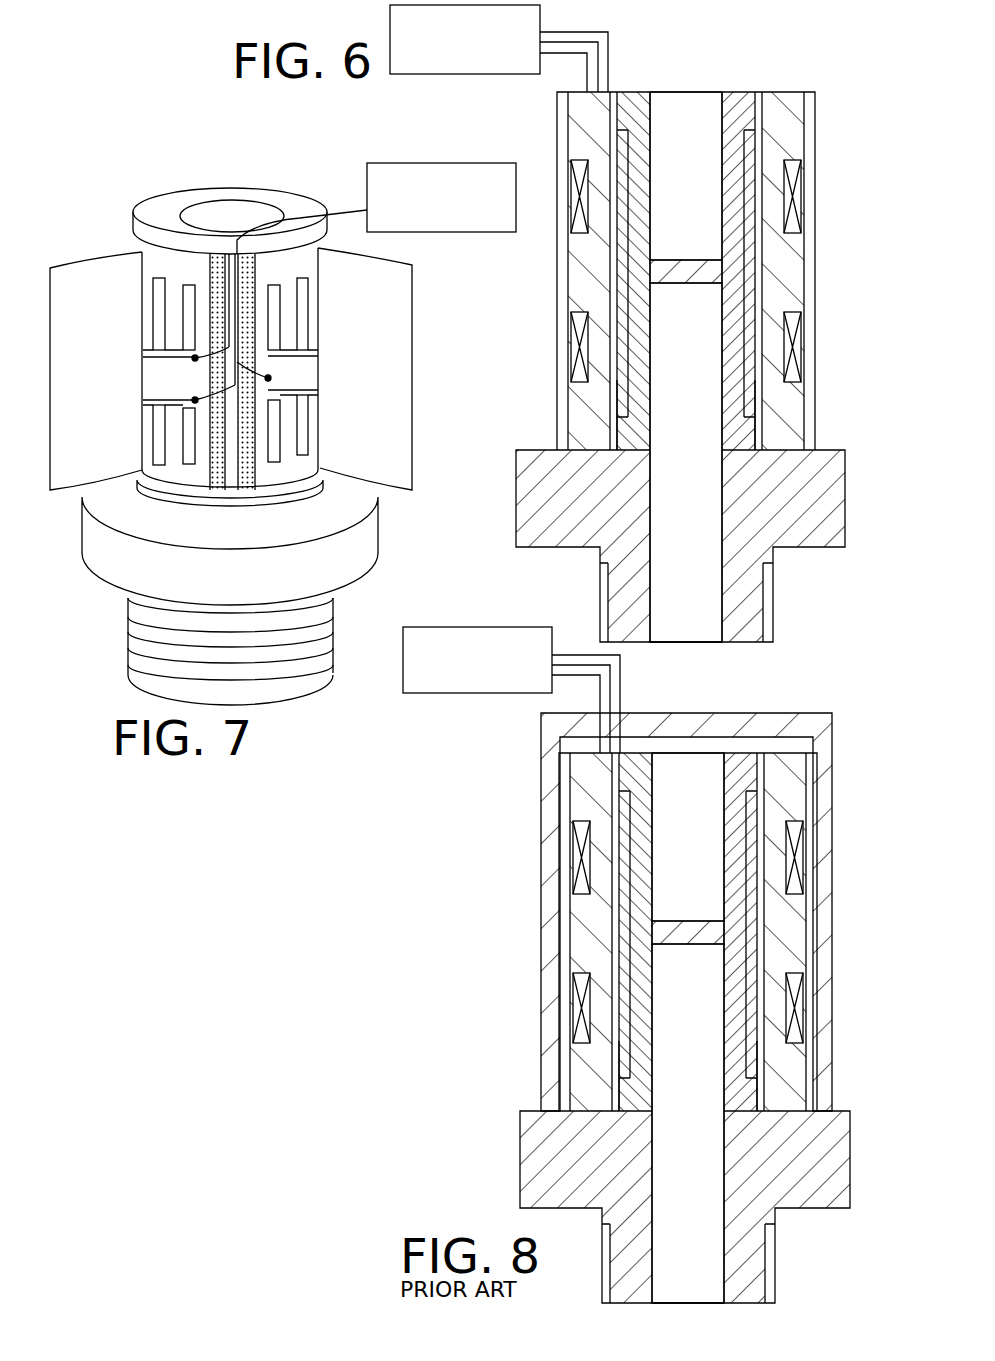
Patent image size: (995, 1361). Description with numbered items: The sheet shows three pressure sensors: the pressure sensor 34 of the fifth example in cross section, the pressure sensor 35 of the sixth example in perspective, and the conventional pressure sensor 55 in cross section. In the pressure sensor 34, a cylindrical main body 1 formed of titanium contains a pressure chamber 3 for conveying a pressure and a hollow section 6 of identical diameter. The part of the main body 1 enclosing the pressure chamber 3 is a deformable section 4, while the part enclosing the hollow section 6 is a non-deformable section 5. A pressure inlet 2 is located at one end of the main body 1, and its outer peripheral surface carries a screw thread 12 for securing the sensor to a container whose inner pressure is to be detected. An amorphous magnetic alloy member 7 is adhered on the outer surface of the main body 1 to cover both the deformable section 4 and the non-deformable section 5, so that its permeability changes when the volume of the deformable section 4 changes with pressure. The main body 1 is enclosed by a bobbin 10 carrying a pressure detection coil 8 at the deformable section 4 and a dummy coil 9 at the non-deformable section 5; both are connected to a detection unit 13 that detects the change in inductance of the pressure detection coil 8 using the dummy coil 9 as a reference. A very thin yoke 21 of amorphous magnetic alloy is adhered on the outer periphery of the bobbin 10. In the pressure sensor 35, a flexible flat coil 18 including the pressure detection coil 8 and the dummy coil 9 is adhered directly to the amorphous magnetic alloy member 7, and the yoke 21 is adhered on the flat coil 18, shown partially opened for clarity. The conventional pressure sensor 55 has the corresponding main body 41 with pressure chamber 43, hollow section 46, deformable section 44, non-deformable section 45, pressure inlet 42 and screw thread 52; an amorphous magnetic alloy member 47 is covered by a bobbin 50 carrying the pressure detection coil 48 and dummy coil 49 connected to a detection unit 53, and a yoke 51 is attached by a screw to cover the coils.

In FIG. 6, the main body 1 is at (845, 500).
In FIG. 7, the main body 1 is at (340, 556).
In FIG. 6, the pressure inlet 2 is at (693, 643).
In FIG. 6, the pressure chamber 3 is at (713, 367).
In FIG. 6, the deformable section 4 is at (733, 410).
In FIG. 6, the non-deformable section 5 is at (733, 160).
In FIG. 6, the hollow section 6 is at (710, 225).
In FIG. 7, the hollow section 6 is at (240, 210).
In FIG. 6, the amorphous magnetic alloy member 7 is at (753, 252).
In FIG. 7, the amorphous magnetic alloy member 7 is at (268, 378).
In FIG. 6, the pressure detection coil 8 is at (792, 320).
In FIG. 7, the pressure detection coil 8 is at (300, 427).
In FIG. 6, the dummy coil 9 is at (788, 197).
In FIG. 7, the dummy coil 9 is at (297, 307).
In FIG. 6, the bobbin 10 is at (790, 118).
In FIG. 6, the screw thread 12 is at (777, 603).
In FIG. 7, the screw thread 12 is at (305, 660).
In FIG. 6, the detection unit 13 is at (540, 16).
In FIG. 7, the detection unit 13 is at (452, 163).
In FIG. 7, the flexible flat coil 18 is at (298, 265).
In FIG. 6, the yoke 21 is at (812, 128).
In FIG. 7, the yoke 21 is at (387, 348).
In FIG. 6, the pressure sensor 34 is at (700, 339).
In FIG. 7, the pressure sensor 35 is at (281, 402).
In FIG. 8, the main body 41 is at (706, 1207).
In FIG. 8, the pressure inlet 42 is at (708, 1318).
In FIG. 8, the pressure chamber 43 is at (765, 1112).
In FIG. 8, the deformable section 44 is at (749, 1073).
In FIG. 8, the non-deformable section 45 is at (749, 934).
In FIG. 8, the hollow section 46 is at (765, 837).
In FIG. 8, the amorphous magnetic alloy member 47 is at (749, 1028).
In FIG. 8, the pressure detection coil 48 is at (726, 998).
In FIG. 8, the dummy coil 49 is at (726, 857).
In FIG. 8, the bobbin 50 is at (719, 932).
In FIG. 8, the yoke 51 is at (686, 893).
In FIG. 8, the screw thread 52 is at (725, 1263).
In FIG. 8, the detection unit 53 is at (511, 668).
In FIG. 8, the pressure sensor 55 is at (706, 994).